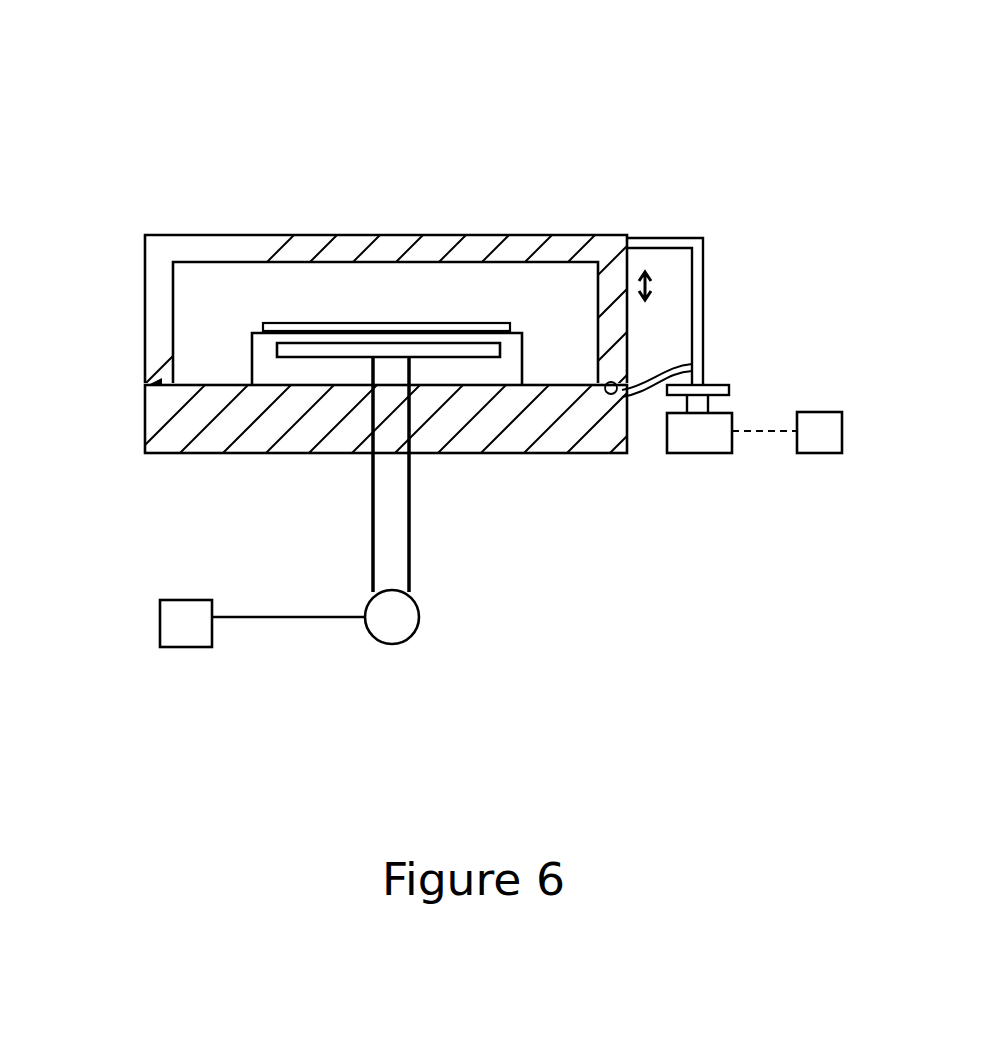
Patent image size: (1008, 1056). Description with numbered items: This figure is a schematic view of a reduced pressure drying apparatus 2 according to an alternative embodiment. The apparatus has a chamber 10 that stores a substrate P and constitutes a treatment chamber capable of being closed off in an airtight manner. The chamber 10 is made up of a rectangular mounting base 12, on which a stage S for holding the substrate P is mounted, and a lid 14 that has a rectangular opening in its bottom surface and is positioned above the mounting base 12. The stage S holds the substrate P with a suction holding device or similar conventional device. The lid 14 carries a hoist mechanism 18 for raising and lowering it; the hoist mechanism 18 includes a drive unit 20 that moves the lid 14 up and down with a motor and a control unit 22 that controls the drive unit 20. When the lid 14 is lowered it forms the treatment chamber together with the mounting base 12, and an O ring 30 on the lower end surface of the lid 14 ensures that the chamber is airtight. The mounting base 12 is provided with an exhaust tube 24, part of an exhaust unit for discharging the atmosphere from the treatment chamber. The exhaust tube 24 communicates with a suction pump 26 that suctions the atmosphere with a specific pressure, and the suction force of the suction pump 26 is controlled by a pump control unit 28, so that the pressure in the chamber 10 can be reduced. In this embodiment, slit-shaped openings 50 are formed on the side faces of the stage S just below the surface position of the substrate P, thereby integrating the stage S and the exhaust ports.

The reduced pressure drying apparatus 2 is at (285, 163).
The chamber 10 is at (160, 216).
The mounting base 12 is at (590, 440).
The lid 14 is at (147, 265).
The hoist mechanism 18 is at (728, 270).
The drive unit 20 is at (715, 437).
The control unit 22 is at (826, 424).
The exhaust tube 24 is at (412, 540).
The suction pump 26 is at (415, 624).
The pump control unit 28 is at (190, 645).
The O ring 30 is at (697, 364).
The slit-shaped openings 50 is at (488, 348).
The substrate P is at (363, 325).
The stage S is at (259, 373).